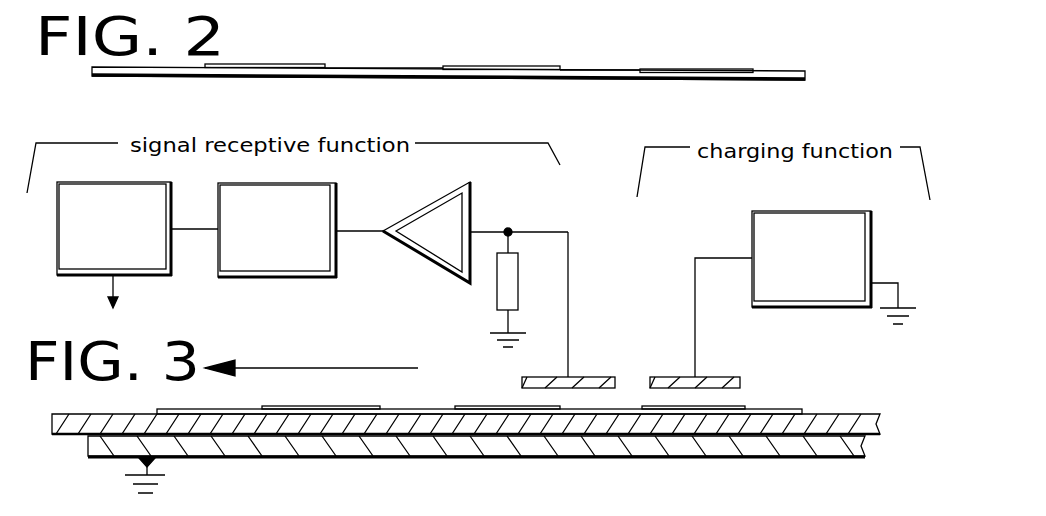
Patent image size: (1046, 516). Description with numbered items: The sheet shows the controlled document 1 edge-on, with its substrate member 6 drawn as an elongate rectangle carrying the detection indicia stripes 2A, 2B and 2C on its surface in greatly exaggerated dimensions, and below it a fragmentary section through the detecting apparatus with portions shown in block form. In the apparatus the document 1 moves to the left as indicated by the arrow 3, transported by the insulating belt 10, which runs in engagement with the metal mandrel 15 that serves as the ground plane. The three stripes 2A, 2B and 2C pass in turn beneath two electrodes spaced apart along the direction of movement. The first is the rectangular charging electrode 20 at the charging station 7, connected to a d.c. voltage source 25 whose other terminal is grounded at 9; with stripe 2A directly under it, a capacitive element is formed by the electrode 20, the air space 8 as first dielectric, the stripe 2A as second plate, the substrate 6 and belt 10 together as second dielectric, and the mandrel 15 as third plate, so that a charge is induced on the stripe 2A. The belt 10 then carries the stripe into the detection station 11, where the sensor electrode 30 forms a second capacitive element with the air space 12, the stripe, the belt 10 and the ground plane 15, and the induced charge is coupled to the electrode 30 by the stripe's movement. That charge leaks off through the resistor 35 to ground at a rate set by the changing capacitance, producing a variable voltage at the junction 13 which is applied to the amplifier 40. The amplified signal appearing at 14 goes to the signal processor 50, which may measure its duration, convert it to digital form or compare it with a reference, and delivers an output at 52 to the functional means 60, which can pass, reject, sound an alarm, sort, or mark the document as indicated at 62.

In FIG. 2, the controlled document 1 is at (780, 72).
In FIG. 3, the controlled document 1 is at (782, 412).
In FIG. 2, the detection indicia stripe 2A is at (700, 72).
In FIG. 3, the detection indicia stripe 2A is at (727, 408).
In FIG. 2, the detection indicia stripe 2B is at (465, 65).
In FIG. 3, the detection indicia stripe 2B is at (490, 407).
In FIG. 2, the detection indicia stripe 2C is at (258, 64).
In FIG. 3, the detection indicia stripe 2C is at (347, 407).
In FIG. 3, the arrow 3 is at (352, 366).
In FIG. 2, the substrate member 6 is at (587, 70).
In FIG. 3, the substrate member 6 is at (197, 395).
In FIG. 3, the charging station 7 is at (683, 320).
In FIG. 3, the air space 8 is at (655, 398).
In FIG. 3, the ground 9 is at (900, 290).
In FIG. 3, the belt 10 is at (828, 420).
In FIG. 3, the detection station 11 is at (576, 320).
In FIG. 3, the air space 12 is at (522, 395).
In FIG. 3, the junction 13 is at (510, 228).
In FIG. 3, the amplifier output signal 14 is at (358, 232).
In FIG. 3, the mandrel 15 is at (807, 453).
In FIG. 3, the charging electrode 20 is at (697, 375).
In FIG. 3, the d.c. voltage source 25 is at (855, 226).
In FIG. 3, the sensor electrode 30 is at (572, 375).
In FIG. 3, the resistor 35 is at (496, 295).
In FIG. 3, the amplifier 40 is at (450, 200).
In FIG. 3, the signal processor 50 is at (295, 252).
In FIG. 3, the output 52 is at (199, 228).
In FIG. 3, the functional means 60 is at (113, 253).
In FIG. 3, the functional output 62 is at (108, 296).